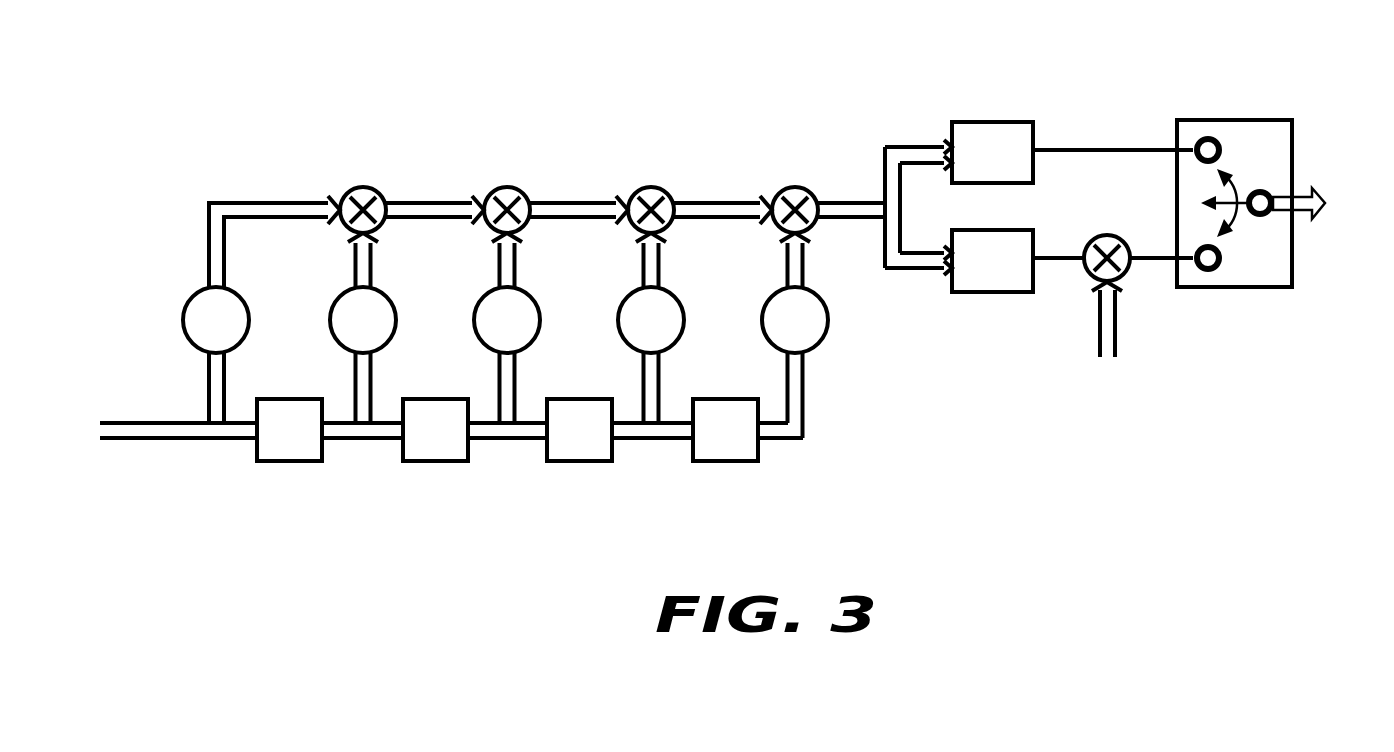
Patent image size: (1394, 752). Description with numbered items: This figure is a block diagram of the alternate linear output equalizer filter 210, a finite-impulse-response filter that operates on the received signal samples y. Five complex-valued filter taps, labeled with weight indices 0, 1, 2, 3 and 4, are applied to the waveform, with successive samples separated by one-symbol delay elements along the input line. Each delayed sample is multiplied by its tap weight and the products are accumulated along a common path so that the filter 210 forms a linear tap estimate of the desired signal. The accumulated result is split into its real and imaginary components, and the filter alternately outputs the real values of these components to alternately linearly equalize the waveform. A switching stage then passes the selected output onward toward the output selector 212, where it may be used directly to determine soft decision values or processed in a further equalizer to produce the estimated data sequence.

The alternate linear output equalizer filter 210 is at (685, 243).
The output selector 212 is at (1322, 206).
The filter weight w0 0 is at (216, 355).
The filter weight w1 1 is at (363, 328).
The filter weight w2 2 is at (507, 328).
The filter weight w3 3 is at (651, 328).
The filter weight w4 4 is at (795, 335).